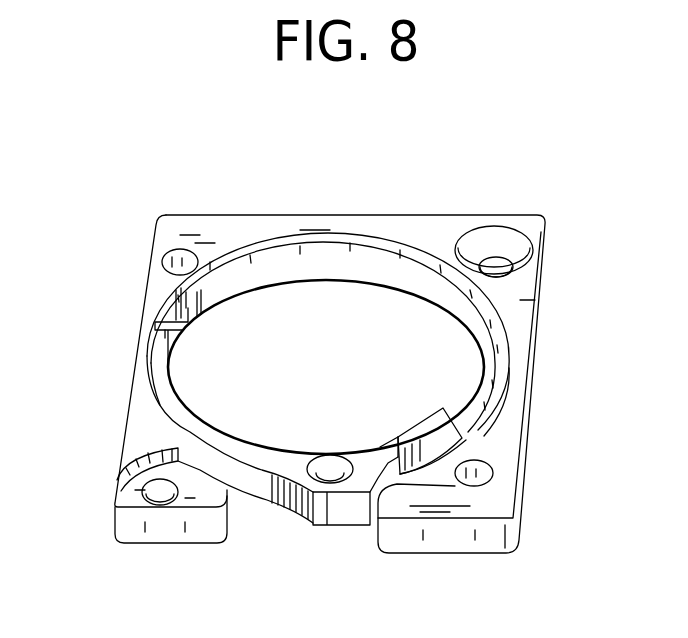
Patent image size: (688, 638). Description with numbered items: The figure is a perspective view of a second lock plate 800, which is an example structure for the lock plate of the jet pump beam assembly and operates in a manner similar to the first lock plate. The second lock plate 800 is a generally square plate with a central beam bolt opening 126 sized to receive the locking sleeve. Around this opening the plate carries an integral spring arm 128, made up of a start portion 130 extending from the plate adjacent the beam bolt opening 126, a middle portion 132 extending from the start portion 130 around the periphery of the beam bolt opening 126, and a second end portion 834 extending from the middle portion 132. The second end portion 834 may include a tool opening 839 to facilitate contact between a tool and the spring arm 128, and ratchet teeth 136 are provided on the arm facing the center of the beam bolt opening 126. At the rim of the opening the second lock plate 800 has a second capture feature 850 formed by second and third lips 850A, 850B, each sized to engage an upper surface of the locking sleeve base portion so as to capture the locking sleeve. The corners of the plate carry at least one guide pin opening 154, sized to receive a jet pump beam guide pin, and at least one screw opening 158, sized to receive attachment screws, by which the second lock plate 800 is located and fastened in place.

The second lock plate 800 is at (568, 176).
The middle portion 132 is at (388, 244).
The spring arm 128 is at (255, 292).
The beam bolt opening 126 is at (312, 377).
The start portion 130 is at (476, 409).
The second capture feature 850 is at (309, 311).
The second lip 850A is at (187, 333).
The third lip 850B is at (450, 408).
The second end portion 834 is at (287, 464).
The tool opening 839 is at (328, 484).
The ratchet teeth 136 is at (314, 454).
The guide pin opening 154 is at (172, 249).
The screw opening 158 is at (533, 247).